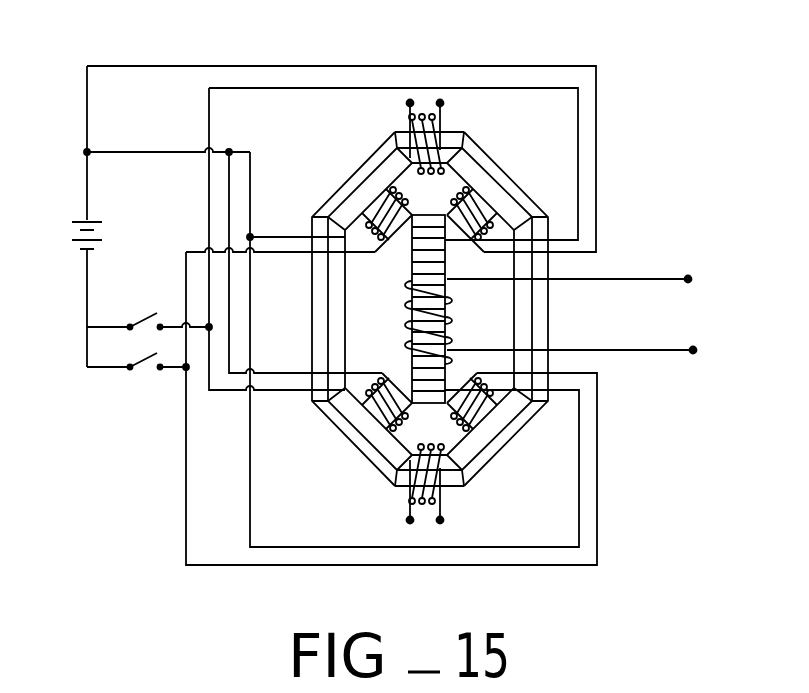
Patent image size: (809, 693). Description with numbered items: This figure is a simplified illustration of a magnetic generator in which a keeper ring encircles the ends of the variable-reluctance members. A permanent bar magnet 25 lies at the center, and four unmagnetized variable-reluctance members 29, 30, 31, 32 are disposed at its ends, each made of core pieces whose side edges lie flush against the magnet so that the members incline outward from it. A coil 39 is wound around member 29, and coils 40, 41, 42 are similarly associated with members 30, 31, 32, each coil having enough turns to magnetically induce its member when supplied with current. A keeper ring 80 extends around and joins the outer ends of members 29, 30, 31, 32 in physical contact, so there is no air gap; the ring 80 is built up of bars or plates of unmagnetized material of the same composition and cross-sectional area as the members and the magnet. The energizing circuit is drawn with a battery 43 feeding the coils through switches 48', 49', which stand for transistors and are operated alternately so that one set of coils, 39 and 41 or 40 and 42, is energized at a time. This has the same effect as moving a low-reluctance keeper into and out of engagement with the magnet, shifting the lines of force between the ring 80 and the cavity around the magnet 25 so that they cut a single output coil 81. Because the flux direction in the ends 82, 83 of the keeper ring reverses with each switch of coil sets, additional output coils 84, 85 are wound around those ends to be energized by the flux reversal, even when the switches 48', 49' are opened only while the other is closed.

The bar magnet 25 is at (403, 267).
The variable-reluctance member 29 is at (363, 423).
The variable-reluctance member 30 is at (483, 430).
The variable-reluctance member 31 is at (492, 198).
The variable-reluctance member 32 is at (375, 188).
The coil 39 is at (383, 458).
The coil 40 is at (493, 410).
The coil 41 is at (462, 183).
The coil 42 is at (358, 190).
The battery 43 is at (100, 220).
The switch 48' is at (148, 296).
The switch 49' is at (128, 394).
The keeper ring 80 is at (552, 331).
The output coil 81 is at (404, 311).
The end of the keeper ring 82 is at (405, 133).
The end of the keeper ring 83 is at (450, 480).
The output coil 84 is at (432, 138).
The output coil 85 is at (417, 477).